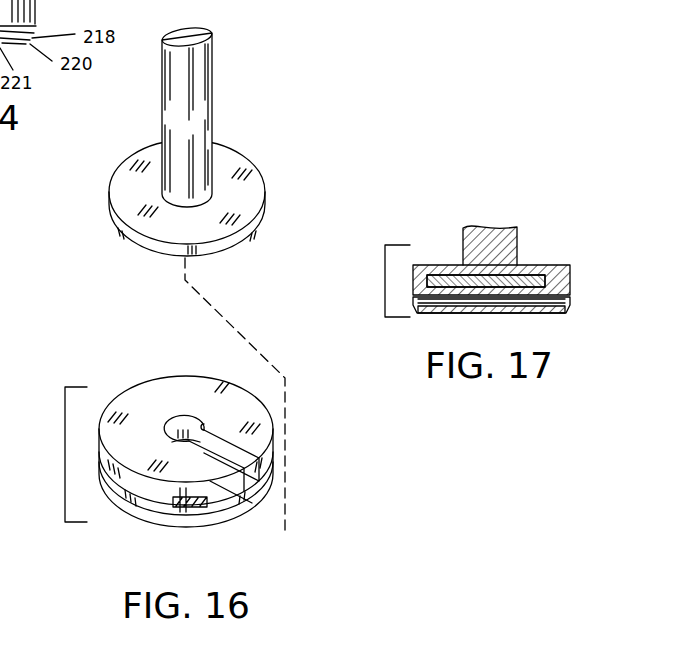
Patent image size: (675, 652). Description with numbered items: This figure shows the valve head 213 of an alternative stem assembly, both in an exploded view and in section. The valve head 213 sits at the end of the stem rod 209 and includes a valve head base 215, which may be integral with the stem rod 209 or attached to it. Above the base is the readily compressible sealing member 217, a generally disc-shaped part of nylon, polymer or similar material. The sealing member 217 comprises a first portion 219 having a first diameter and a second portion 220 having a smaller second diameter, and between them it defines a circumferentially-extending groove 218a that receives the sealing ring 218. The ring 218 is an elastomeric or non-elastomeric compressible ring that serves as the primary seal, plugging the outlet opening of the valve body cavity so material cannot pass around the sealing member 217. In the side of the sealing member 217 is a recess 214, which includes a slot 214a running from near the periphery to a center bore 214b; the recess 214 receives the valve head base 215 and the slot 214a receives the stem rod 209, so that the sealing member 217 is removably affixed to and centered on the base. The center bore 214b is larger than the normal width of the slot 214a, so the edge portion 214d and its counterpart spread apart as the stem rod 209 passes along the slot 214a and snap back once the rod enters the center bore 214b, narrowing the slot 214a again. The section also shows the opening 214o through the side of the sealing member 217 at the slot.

In FIG. 16, the stem rod 209 is at (213, 70).
In FIG. 17, the valve head 213 is at (371, 281).
In FIG. 16, the recess 214 is at (256, 455).
In FIG. 16, the slot 214a is at (228, 504).
In FIG. 16, the center bore 214b is at (187, 428).
In FIG. 16, the edge portion 214d is at (201, 424).
In FIG. 16, the side opening 214o is at (218, 454).
In FIG. 16, the valve head base 215 is at (265, 186).
In FIG. 17, the valve head base 215 is at (515, 273).
In FIG. 16, the sealing member 217 is at (189, 455).
In FIG. 16, the sealing ring 218 is at (123, 504).
In FIG. 17, the sealing ring 218 is at (572, 304).
In FIG. 17, the circumferentially-extending groove 218a is at (540, 303).
In FIG. 16, the first portion 219 is at (128, 388).
In FIG. 17, the first portion 219 is at (573, 272).
In FIG. 16, the second portion 220 is at (158, 522).
In FIG. 17, the second portion 220 is at (548, 306).